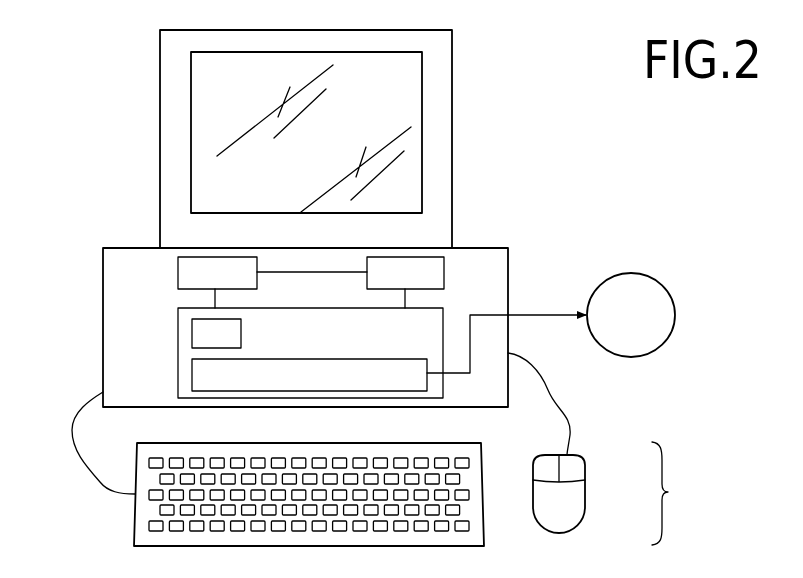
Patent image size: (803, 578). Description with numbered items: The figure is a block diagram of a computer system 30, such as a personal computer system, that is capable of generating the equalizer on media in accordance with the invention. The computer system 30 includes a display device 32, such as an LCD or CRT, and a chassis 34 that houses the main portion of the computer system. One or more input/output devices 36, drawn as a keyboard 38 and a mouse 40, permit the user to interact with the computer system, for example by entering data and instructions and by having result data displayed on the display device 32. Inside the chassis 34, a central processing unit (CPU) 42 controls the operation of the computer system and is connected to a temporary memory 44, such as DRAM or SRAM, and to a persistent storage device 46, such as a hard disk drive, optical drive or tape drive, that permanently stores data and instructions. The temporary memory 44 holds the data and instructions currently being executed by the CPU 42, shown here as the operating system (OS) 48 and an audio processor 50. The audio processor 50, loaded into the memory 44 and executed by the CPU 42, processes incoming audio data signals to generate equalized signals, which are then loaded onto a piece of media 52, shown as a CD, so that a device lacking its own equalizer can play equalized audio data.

The computer system 30 is at (573, 169).
The display device 32 is at (209, 94).
The chassis 34 is at (103, 258).
The input/output devices 36 is at (677, 493).
The keyboard 38 is at (483, 470).
The mouse 40 is at (586, 482).
The central processing unit (CPU) 42 is at (177, 277).
The temporary memory 44 is at (177, 315).
The persistent storage device 46 is at (445, 274).
The operating system (OS) 48 is at (192, 340).
The audio processor 50 is at (190, 375).
The media 52 is at (632, 273).